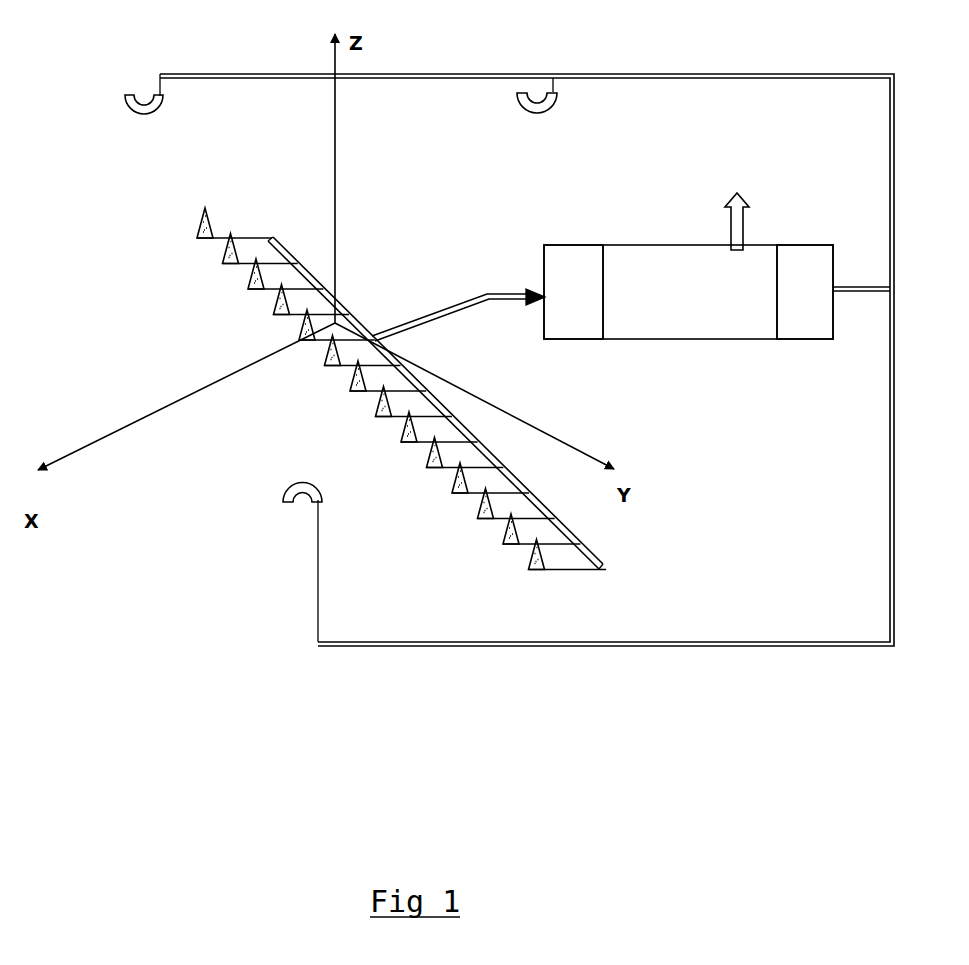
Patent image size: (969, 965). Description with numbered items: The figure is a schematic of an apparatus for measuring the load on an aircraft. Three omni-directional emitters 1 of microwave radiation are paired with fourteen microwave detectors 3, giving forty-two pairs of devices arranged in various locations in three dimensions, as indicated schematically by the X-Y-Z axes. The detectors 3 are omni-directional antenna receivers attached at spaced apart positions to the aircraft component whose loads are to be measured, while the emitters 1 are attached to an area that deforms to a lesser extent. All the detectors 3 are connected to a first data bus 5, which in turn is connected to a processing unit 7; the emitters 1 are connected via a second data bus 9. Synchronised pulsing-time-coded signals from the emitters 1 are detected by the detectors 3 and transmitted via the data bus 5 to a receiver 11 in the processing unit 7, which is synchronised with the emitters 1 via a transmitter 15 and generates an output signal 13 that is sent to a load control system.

The omni-directional emitter 1 is at (128, 102).
The microwave detector 3 is at (226, 272).
The first data bus 5 is at (594, 536).
The processing unit 7 is at (709, 348).
The second data bus 9 is at (708, 60).
The receiver 11 is at (552, 270).
The output signal 13 is at (725, 230).
The transmitter 15 is at (803, 325).